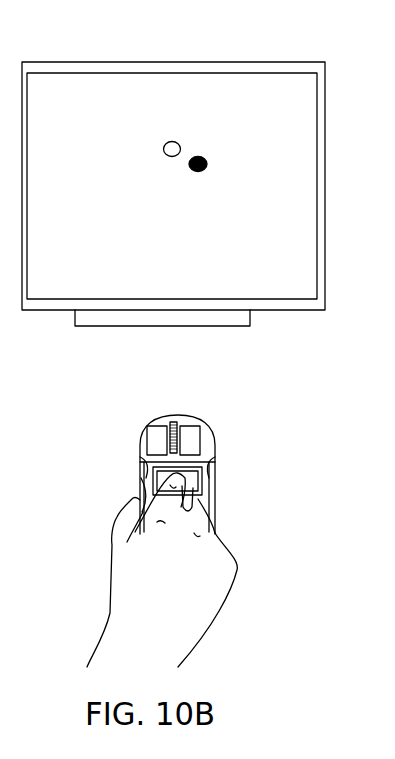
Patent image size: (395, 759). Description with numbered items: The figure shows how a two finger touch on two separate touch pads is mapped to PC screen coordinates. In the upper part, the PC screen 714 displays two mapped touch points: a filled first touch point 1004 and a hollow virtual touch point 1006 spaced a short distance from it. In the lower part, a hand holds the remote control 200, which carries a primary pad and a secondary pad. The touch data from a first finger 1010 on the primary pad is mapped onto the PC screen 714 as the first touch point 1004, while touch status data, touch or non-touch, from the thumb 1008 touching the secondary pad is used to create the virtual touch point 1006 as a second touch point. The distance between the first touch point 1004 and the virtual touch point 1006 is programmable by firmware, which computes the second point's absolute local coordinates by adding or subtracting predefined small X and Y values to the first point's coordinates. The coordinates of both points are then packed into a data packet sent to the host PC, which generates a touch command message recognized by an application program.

The PC screen 714 is at (282, 59).
The first touch point 1004 is at (200, 156).
The virtual touch point 1006 is at (172, 141).
The remote control 200 is at (223, 458).
The first finger 1010 is at (180, 478).
The thumb 1008 is at (133, 500).